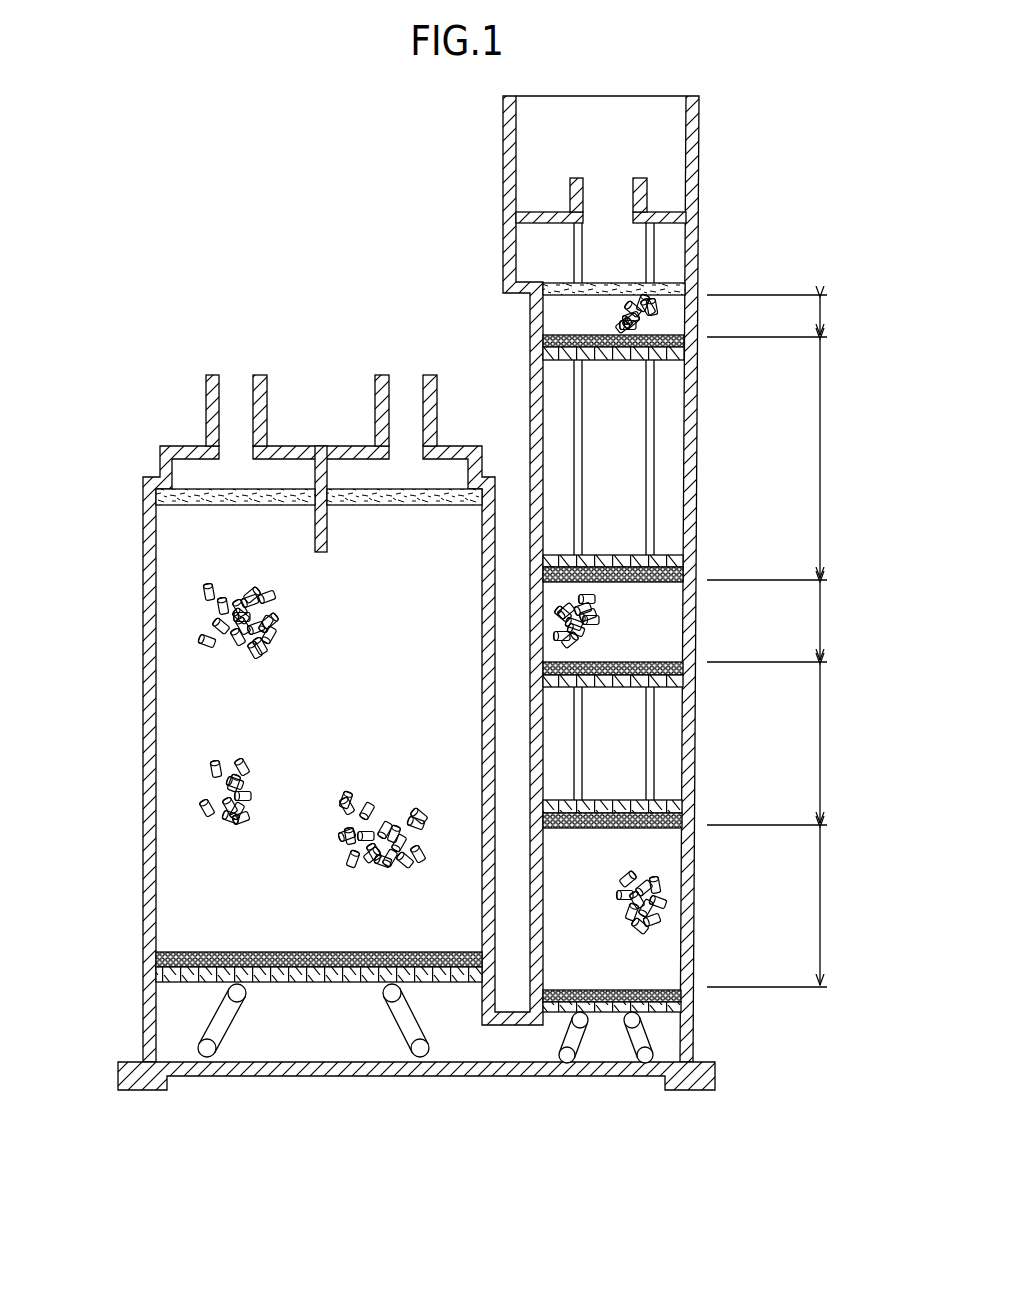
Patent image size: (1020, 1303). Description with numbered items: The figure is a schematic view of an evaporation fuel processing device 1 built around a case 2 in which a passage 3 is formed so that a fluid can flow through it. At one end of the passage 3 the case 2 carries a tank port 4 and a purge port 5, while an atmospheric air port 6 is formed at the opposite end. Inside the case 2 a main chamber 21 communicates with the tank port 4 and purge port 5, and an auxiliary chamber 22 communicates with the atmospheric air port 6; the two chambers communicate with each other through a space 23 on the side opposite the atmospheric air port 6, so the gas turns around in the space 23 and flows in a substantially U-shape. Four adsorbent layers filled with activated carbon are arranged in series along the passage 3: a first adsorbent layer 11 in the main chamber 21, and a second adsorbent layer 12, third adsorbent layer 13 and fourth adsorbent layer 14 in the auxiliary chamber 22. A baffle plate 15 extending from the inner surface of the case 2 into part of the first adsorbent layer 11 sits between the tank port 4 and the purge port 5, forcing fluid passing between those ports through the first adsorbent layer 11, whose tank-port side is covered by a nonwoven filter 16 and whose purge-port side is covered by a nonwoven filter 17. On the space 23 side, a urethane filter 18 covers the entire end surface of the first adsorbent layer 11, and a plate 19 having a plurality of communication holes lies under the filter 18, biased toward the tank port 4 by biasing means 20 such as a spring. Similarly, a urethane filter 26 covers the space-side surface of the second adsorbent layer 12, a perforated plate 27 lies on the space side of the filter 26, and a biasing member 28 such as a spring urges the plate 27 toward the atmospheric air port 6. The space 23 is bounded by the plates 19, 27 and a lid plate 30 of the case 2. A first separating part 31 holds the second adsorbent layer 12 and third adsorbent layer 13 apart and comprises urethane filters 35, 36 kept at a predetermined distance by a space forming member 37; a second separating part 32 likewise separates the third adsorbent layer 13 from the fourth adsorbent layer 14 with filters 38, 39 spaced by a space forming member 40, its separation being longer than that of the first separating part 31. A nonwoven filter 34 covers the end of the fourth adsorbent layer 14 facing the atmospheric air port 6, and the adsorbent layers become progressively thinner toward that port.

The evaporation fuel processing device 1 is at (143, 448).
The case 2 is at (150, 775).
The passage 3 is at (190, 715).
The tank port 4 is at (237, 392).
The purge port 5 is at (402, 387).
The atmospheric air port 6 is at (600, 208).
The first adsorbent layer 11 is at (233, 558).
The second adsorbent layer 12 is at (645, 860).
The third adsorbent layer 13 is at (648, 622).
The fourth adsorbent layer 14 is at (660, 316).
The baffle plate 15 is at (323, 532).
The filter 16 is at (253, 502).
The filter 17 is at (415, 503).
The filter 18 is at (275, 952).
The plate 19 is at (323, 952).
The biasing means 20 is at (207, 1050).
The main chamber 21 is at (185, 910).
The auxiliary chamber 22 is at (630, 708).
The space 23 is at (357, 1038).
The filter 26 is at (680, 995).
The plate 27 is at (677, 1005).
The biasing member 28 is at (633, 1060).
The lid plate 30 is at (490, 1076).
The first separating part 31 is at (667, 788).
The second separating part 32 is at (668, 486).
The filter 34 is at (670, 288).
The filter 35 is at (543, 820).
The filter 36 is at (543, 668).
The space forming member 37 is at (652, 748).
The filter 38 is at (655, 560).
The filter 39 is at (650, 341).
The space forming member 40 is at (650, 427).